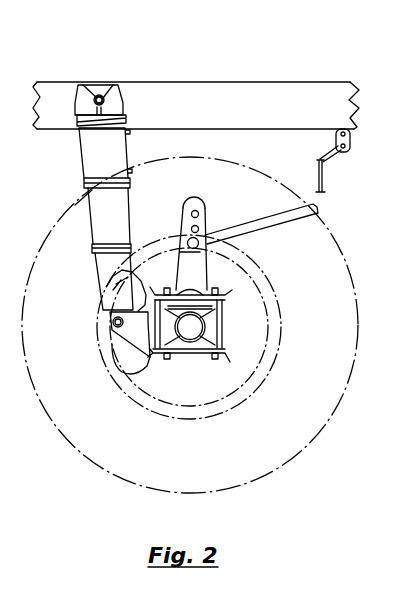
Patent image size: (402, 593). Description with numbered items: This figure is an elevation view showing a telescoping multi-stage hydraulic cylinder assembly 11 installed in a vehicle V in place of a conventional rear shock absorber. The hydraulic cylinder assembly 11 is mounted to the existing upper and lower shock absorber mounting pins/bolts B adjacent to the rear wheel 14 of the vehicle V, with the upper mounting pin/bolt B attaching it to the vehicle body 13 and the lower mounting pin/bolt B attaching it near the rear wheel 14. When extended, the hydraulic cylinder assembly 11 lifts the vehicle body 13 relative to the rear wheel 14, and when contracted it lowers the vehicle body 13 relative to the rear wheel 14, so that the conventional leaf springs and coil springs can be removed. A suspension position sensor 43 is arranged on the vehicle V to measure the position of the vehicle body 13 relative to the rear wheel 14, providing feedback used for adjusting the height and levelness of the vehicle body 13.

The telescoping multi-stage hydraulic cylinder assembly 11 is at (90, 157).
The vehicle body 13 is at (175, 92).
The rear wheel 14 is at (297, 435).
The suspension position sensor 43 is at (351, 151).
The shock absorber mounting pins/bolts B is at (98, 96).
The vehicle V is at (245, 92).